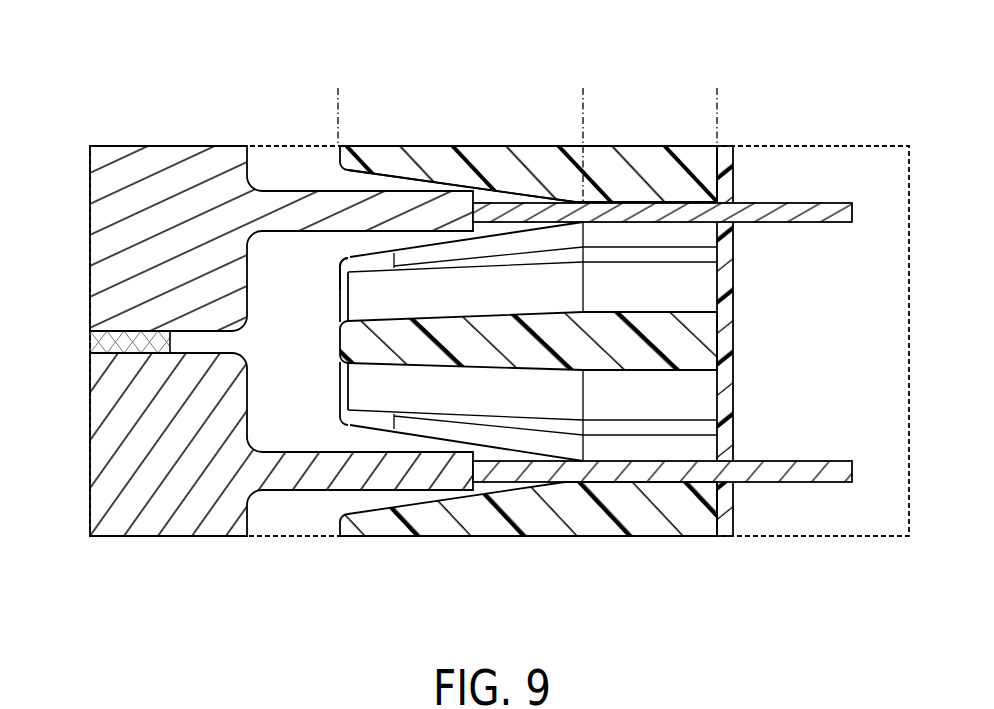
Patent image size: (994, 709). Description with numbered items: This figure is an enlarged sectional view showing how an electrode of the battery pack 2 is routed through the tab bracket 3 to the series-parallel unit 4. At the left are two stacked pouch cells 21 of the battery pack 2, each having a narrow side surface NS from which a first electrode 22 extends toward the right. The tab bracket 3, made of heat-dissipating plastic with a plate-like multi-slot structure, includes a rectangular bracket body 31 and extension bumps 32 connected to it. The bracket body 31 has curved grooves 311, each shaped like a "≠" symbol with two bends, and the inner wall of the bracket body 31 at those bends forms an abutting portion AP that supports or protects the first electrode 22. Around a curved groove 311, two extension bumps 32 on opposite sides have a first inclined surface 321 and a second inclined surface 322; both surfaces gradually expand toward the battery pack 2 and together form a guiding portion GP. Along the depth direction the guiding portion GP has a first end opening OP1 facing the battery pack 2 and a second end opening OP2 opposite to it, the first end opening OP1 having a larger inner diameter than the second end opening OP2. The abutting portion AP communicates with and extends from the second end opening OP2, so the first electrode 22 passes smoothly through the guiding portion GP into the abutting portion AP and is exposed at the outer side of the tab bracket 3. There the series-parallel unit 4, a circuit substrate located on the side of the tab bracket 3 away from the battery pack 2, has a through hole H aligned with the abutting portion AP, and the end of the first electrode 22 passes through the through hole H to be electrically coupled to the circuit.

The battery pack 2 is at (462, 342).
The pouch cell 21 is at (160, 165).
The first electrode 22 is at (825, 222).
The tab bracket 3 is at (543, 364).
The bracket body 31 is at (667, 333).
The extension bump 32 is at (457, 333).
The curved groove 311 is at (683, 283).
The first inclined surface 321 is at (398, 188).
The second inclined surface 322 is at (355, 253).
The series-parallel unit 4 is at (744, 262).
The through hole H is at (726, 194).
The narrow side surface NS is at (262, 275).
The first end opening OP1 is at (336, 244).
The second end opening OP2 is at (520, 196).
The guiding portion GP is at (583, 86).
The abutting portion AP is at (583, 86).